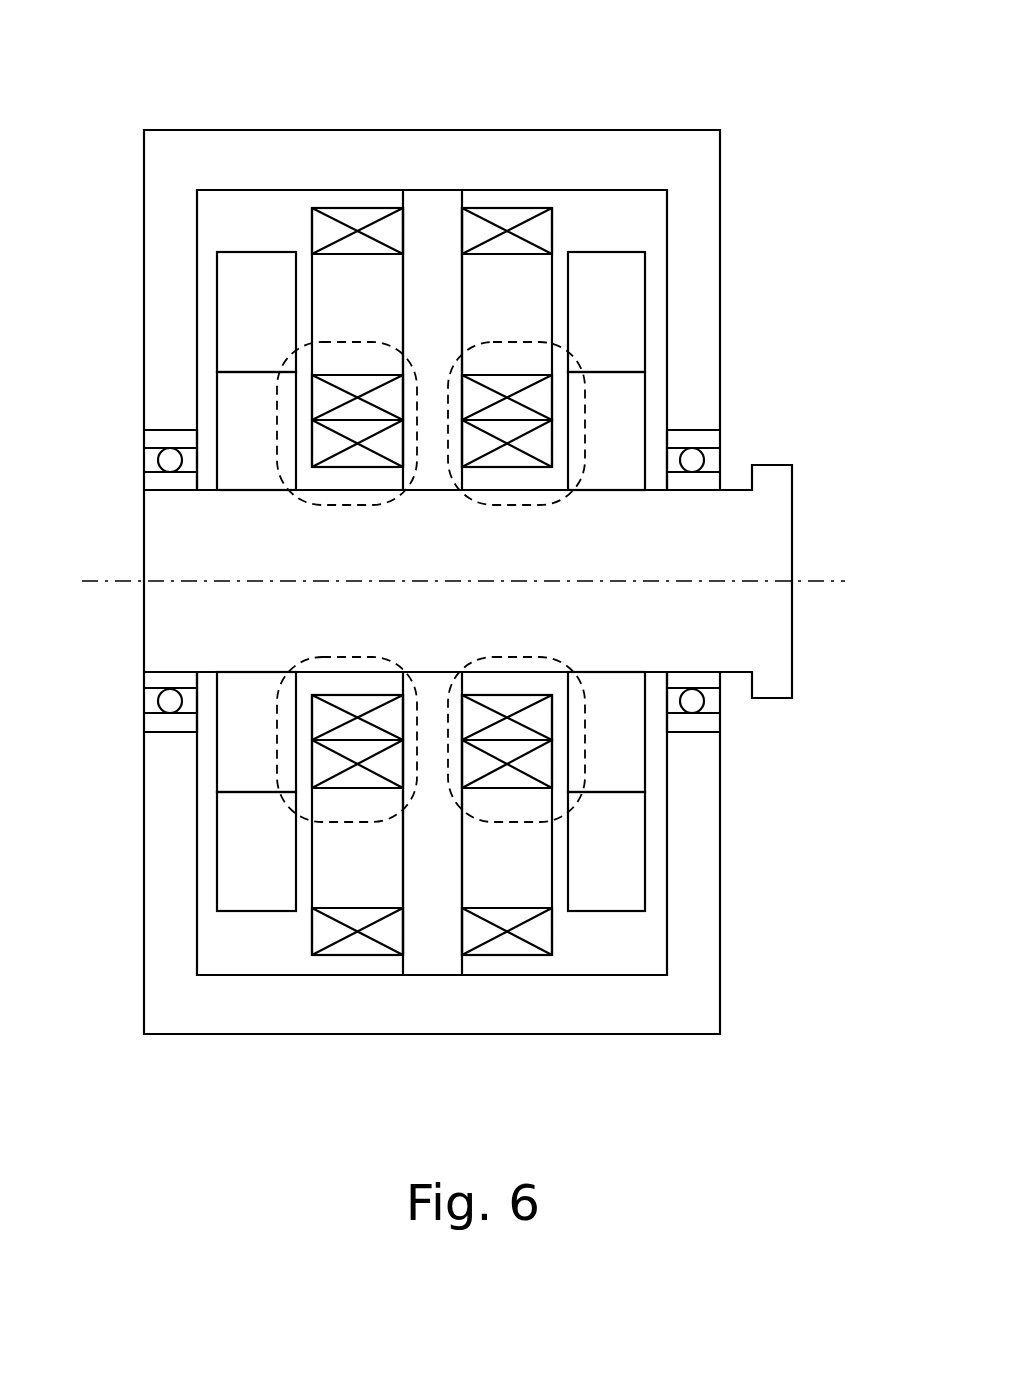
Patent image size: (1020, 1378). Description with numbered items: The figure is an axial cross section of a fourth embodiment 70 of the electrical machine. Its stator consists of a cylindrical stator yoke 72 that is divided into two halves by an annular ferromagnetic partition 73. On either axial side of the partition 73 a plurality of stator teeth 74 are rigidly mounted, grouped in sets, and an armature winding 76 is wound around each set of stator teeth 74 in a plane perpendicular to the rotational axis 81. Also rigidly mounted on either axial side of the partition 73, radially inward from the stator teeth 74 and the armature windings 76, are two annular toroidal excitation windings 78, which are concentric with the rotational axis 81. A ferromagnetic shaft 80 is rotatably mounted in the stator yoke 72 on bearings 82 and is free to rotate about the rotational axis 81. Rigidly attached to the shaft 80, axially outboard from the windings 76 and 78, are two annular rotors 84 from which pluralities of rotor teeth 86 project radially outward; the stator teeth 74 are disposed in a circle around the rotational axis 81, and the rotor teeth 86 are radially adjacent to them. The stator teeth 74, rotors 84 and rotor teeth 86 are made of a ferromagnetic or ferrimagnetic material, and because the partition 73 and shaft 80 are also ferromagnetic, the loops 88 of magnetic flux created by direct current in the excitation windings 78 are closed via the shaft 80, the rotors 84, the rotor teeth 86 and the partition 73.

The fourth embodiment 70 is at (772, 92).
The stator yoke 72 is at (170, 165).
The annular ferromagnetic partition 73 is at (415, 253).
The stator teeth 74 is at (340, 317).
The armature winding 76 is at (354, 222).
The excitation windings 78 is at (478, 447).
The shaft 80 is at (171, 567).
The rotational axis 81 is at (818, 580).
The bearings 82 is at (165, 462).
The rotors 84 is at (228, 440).
The rotor teeth 86 is at (236, 317).
The loops of magnetic flux 88 is at (355, 507).